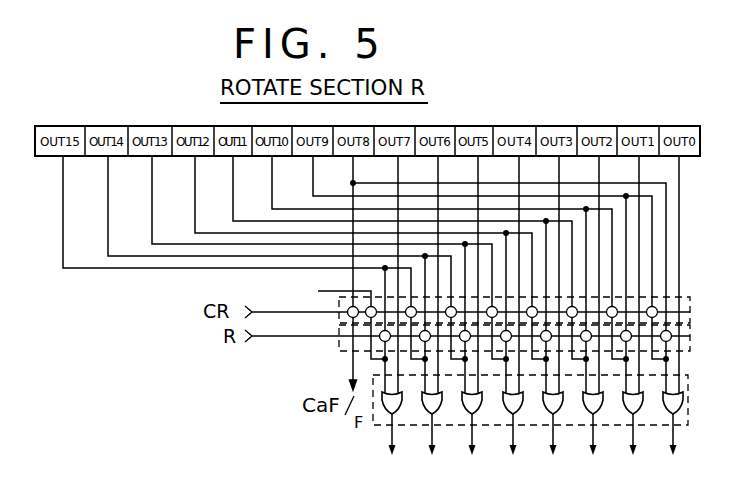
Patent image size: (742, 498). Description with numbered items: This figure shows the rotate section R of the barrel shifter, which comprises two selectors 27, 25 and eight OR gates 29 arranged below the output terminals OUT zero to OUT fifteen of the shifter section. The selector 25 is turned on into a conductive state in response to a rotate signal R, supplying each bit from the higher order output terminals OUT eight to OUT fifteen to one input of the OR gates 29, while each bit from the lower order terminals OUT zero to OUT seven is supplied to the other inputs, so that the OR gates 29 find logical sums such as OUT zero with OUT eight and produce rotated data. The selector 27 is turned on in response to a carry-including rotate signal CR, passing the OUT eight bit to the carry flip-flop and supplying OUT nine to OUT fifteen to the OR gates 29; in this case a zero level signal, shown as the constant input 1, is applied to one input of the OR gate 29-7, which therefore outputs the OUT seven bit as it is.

The logic one input 1 is at (341, 297).
The selector 25 is at (690, 351).
The selector 27 is at (690, 297).
The OR gates 29 is at (688, 402).
The OR gate 29-7 is at (391, 413).